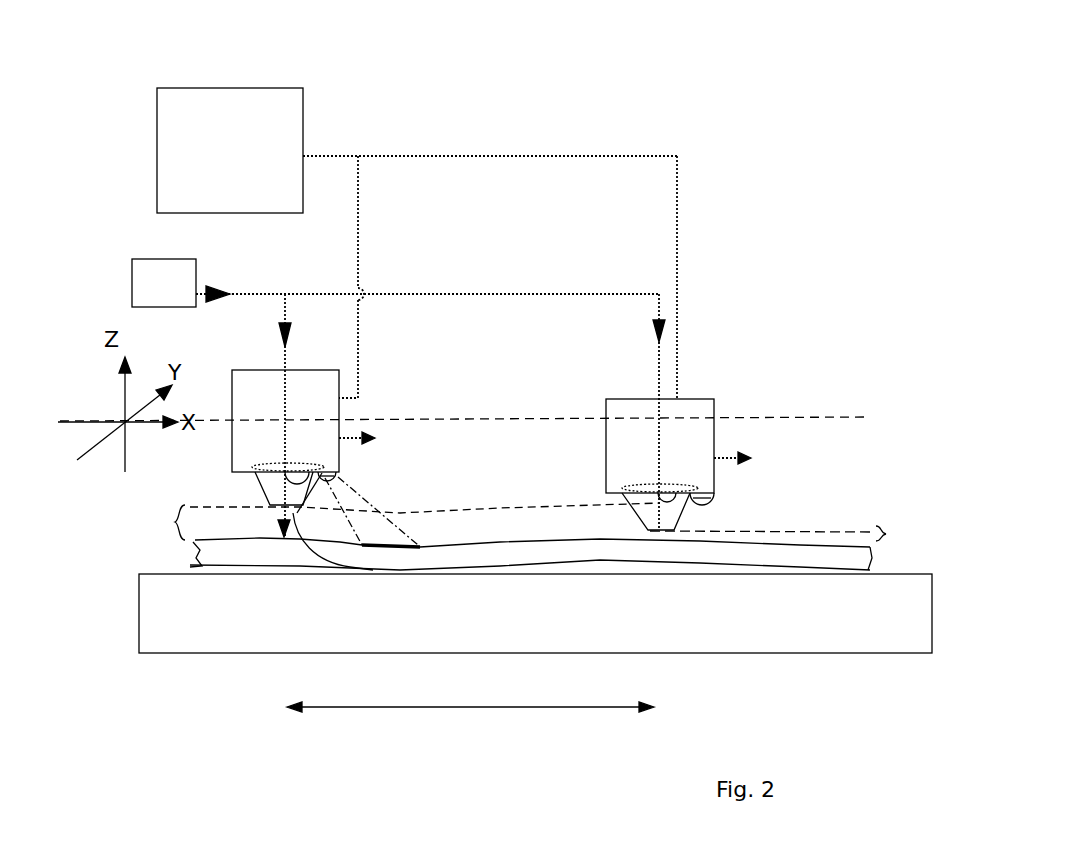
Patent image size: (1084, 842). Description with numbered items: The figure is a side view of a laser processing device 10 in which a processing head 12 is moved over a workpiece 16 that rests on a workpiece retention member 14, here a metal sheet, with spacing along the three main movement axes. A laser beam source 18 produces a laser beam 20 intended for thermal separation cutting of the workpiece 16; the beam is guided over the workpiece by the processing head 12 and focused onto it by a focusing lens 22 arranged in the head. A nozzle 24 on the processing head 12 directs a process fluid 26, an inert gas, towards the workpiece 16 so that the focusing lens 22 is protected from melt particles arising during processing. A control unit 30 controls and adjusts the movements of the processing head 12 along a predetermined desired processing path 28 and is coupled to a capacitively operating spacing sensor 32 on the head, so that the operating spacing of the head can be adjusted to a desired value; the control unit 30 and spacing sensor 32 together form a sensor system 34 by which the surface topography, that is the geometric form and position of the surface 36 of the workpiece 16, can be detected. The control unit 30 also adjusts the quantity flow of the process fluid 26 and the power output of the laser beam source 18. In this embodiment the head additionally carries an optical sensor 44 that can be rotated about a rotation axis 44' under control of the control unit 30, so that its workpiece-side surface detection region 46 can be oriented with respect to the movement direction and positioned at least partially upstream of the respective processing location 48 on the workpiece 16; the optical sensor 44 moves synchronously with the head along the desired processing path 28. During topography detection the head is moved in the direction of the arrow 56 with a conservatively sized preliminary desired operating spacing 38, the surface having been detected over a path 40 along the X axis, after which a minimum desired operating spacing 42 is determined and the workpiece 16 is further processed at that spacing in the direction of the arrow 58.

The processing device 10 is at (663, 58).
The processing head 12 is at (285, 421).
The workpiece retention member 14 is at (535, 613).
The workpiece 16 is at (215, 555).
The laser beam source 18 is at (164, 283).
The laser beam 20 is at (287, 362).
The focusing lens 22 is at (340, 464).
The nozzle 24 is at (258, 492).
The process fluid 26 is at (373, 570).
The desired processing path 28 is at (820, 417).
The control unit 30 is at (230, 150).
The spacing sensor 32 is at (208, 473).
The sensor system 34 is at (336, 88).
The surface 36 is at (537, 527).
The preliminary desired operating spacing 38 is at (396, 521).
The path 40 is at (483, 707).
The minimum desired operating spacing 42 is at (787, 539).
The optical sensor 44 is at (561, 497).
The rotation axis 44' is at (373, 277).
The surface detection region 46 is at (410, 543).
The processing location 48 is at (275, 513).
The arrow 56 is at (348, 437).
The arrow 58 is at (747, 457).